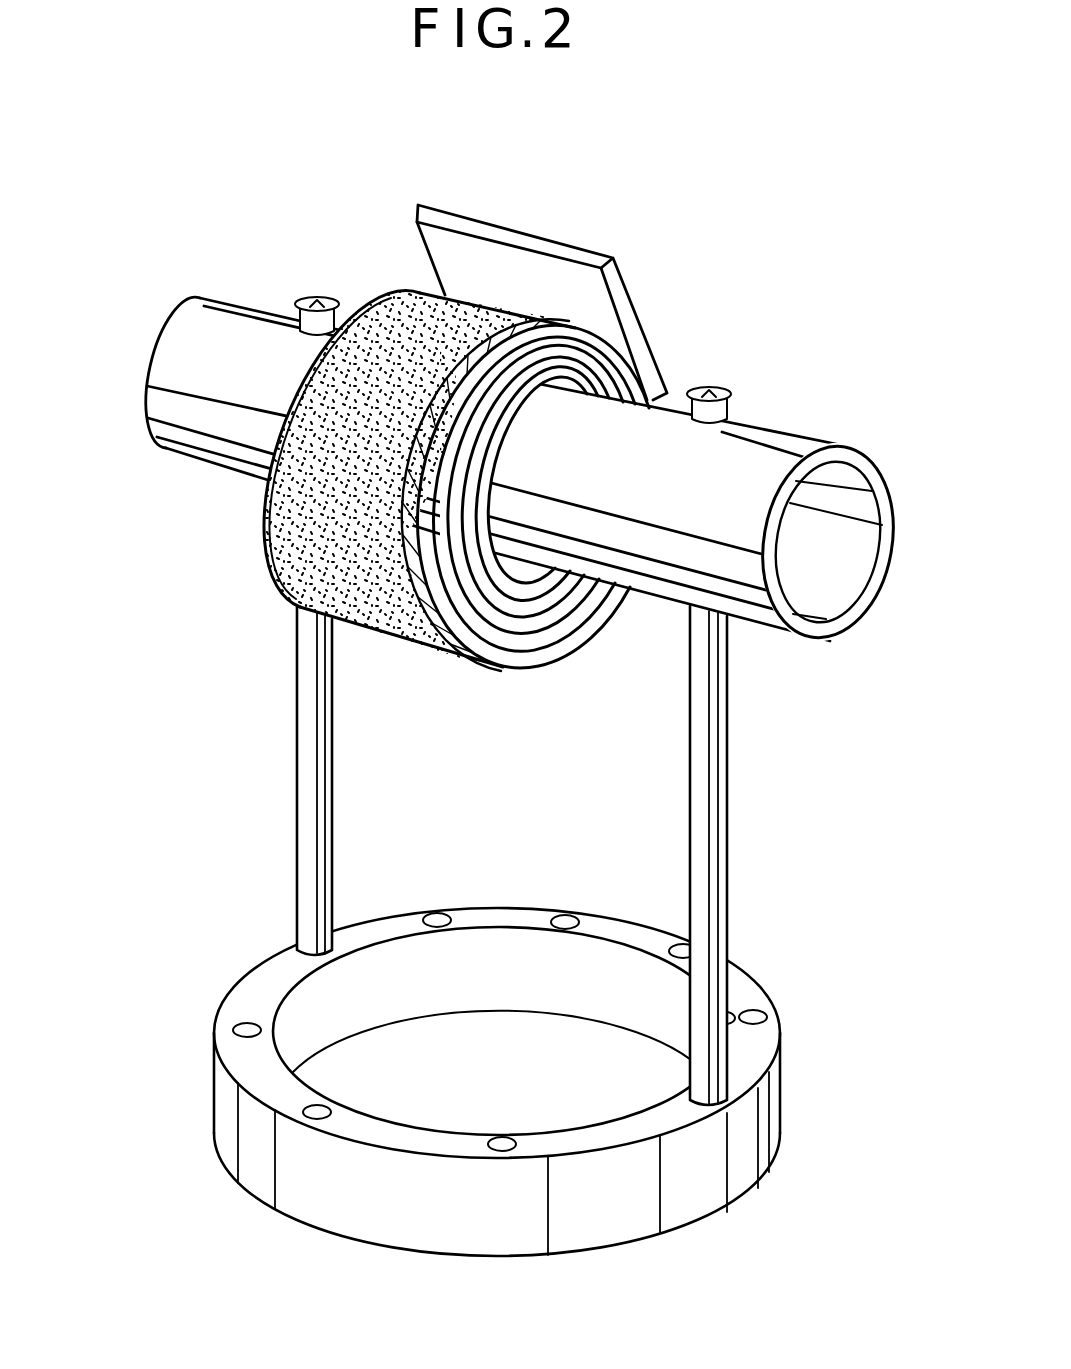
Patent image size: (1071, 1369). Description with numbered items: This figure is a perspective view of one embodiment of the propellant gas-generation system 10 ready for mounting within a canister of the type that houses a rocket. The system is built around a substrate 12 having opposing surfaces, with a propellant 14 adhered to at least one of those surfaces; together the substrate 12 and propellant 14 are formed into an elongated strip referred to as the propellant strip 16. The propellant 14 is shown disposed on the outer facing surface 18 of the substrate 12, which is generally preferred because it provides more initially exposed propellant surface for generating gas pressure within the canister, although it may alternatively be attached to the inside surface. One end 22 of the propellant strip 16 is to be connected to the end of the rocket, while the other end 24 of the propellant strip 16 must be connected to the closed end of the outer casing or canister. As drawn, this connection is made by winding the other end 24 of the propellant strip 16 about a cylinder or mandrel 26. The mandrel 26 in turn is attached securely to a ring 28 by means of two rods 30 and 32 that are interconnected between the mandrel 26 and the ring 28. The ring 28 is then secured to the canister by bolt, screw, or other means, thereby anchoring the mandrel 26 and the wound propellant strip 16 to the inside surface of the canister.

The propellant gas-generation system 10 is at (222, 848).
The substrate 12 is at (530, 667).
The propellant 14 is at (300, 578).
The propellant strip 16 is at (412, 283).
The outer facing surface 18 is at (268, 490).
The one end 22 is at (633, 293).
The other end 24 is at (660, 343).
The mandrel 26 is at (170, 376).
The ring 28 is at (262, 985).
The rod 30 is at (298, 748).
The rod 32 is at (728, 750).